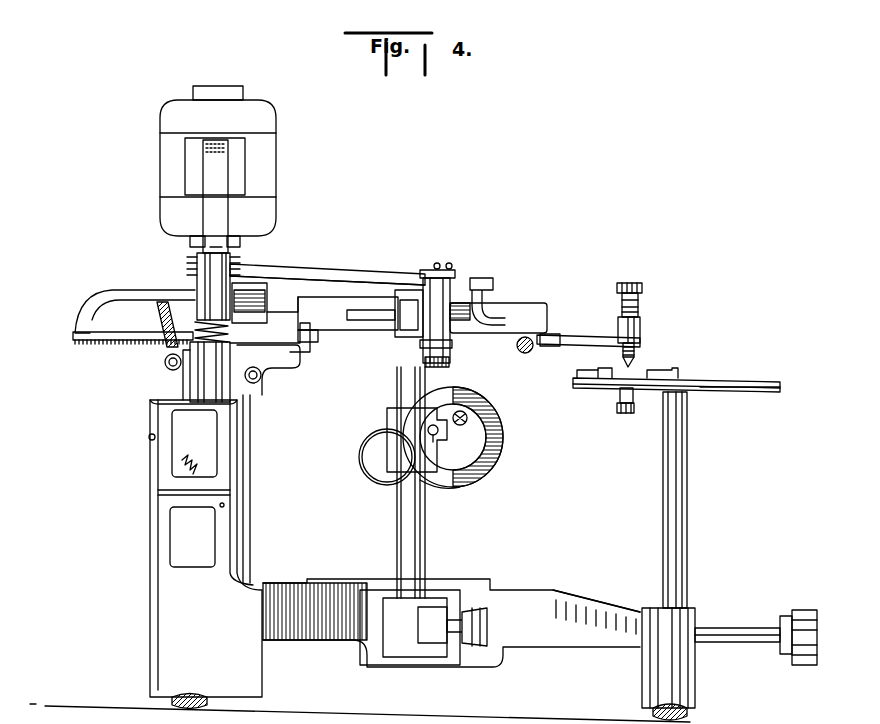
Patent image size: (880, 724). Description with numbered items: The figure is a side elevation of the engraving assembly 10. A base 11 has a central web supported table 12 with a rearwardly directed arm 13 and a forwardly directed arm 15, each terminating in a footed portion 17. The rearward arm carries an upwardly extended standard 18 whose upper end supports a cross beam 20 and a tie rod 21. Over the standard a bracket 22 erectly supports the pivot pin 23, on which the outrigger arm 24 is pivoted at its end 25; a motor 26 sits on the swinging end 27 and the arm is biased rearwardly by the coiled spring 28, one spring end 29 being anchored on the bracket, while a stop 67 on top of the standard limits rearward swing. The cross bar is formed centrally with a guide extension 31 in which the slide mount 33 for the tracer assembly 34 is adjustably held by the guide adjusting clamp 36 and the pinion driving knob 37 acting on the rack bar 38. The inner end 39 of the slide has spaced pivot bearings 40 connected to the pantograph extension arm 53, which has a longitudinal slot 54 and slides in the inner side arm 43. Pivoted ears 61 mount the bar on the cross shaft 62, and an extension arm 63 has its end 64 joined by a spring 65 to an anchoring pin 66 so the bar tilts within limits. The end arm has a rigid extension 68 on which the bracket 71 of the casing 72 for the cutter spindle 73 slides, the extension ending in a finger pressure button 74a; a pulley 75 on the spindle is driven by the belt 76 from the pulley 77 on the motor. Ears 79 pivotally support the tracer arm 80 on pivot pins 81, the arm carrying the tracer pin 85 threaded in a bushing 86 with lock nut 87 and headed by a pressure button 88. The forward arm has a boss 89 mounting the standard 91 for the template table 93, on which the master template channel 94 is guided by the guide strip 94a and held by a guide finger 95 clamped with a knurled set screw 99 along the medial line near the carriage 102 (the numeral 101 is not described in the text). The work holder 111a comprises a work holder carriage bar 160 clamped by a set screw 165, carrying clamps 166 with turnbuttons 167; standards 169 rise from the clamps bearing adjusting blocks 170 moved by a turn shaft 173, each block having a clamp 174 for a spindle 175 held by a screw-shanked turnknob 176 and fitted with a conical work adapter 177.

The engraving assembly 10 is at (98, 517).
The base 11 is at (512, 658).
The central web supported table 12 is at (362, 580).
The rearwardly directed arm 13 is at (290, 592).
The forwardly directed arm 15 is at (595, 610).
The footed portion 17 is at (697, 699).
The standard 18 is at (158, 590).
The cross beam 20 is at (280, 360).
The tie rod 21 is at (165, 364).
The bracket 22 is at (205, 387).
The pivot pin 23 is at (212, 248).
The outrigger arm 24 is at (218, 200).
The end of outrigger arm 25 is at (197, 283).
The motor 26 is at (277, 148).
The swinging end 27 is at (197, 145).
The coiled spring 28 is at (195, 324).
The spring end 29 is at (190, 368).
The guide extension 31 is at (300, 352).
The slide mount 33 is at (80, 332).
The tracer assembly 34 is at (527, 257).
The guide adjusting clamp 36 is at (266, 300).
The pinion driving knob 37 is at (255, 285).
The rack bar 38 is at (80, 340).
The inner end of slide mount 39 is at (290, 276).
The pivot bearings 40 is at (330, 280).
The inner side arm 43 is at (395, 312).
The pantograph extension arm 53 is at (318, 312).
The longitudinal slot 54 is at (365, 318).
The pivoted ears 61 is at (268, 378).
The cross shaft 62 is at (254, 384).
The extension arm 63 is at (152, 418).
The end of extension arm 64 is at (144, 446).
The spring 65 is at (190, 468).
The anchoring pin 66 is at (224, 504).
The stop 67 is at (160, 310).
The extension 68 is at (405, 290).
The bracket 71 is at (430, 335).
The casing 72 is at (450, 348).
The cutter spindle 73 is at (436, 270).
The finger pressure button 74a is at (484, 278).
The pulley 75 is at (450, 266).
The belt 76 is at (322, 268).
The pulley 77 is at (190, 262).
The ears 79 is at (528, 354).
The tracer arm 80 is at (594, 336).
The pivot pins 81 is at (518, 350).
The tracer pin 85 is at (636, 350).
The bushing 86 is at (641, 328).
The lock nut 87 is at (640, 312).
The pressure button 88 is at (632, 283).
The boss 89 is at (690, 616).
The standard 91 is at (680, 494).
The template table 93 is at (766, 392).
The master template channel 94 is at (590, 390).
The guide strip 94a is at (752, 382).
The guide finger 95 is at (634, 397).
The knurled set screw 99 is at (624, 413).
The stop 101 is at (576, 372).
The carriage 102 is at (610, 372).
The work holder 111a is at (445, 518).
The work holder carriage bar 160 is at (420, 628).
The set screw 165 is at (770, 628).
The clamp 166 is at (400, 660).
The turnbutton 167 is at (478, 648).
The standard 169 is at (400, 526).
The adjusting block 170 is at (390, 416).
The turn shaft 173 is at (372, 462).
The clamp 174 is at (452, 482).
The spindle 175 is at (430, 433).
The screw-shanked turnknob 176 is at (468, 416).
The conical work adapter 177 is at (490, 456).